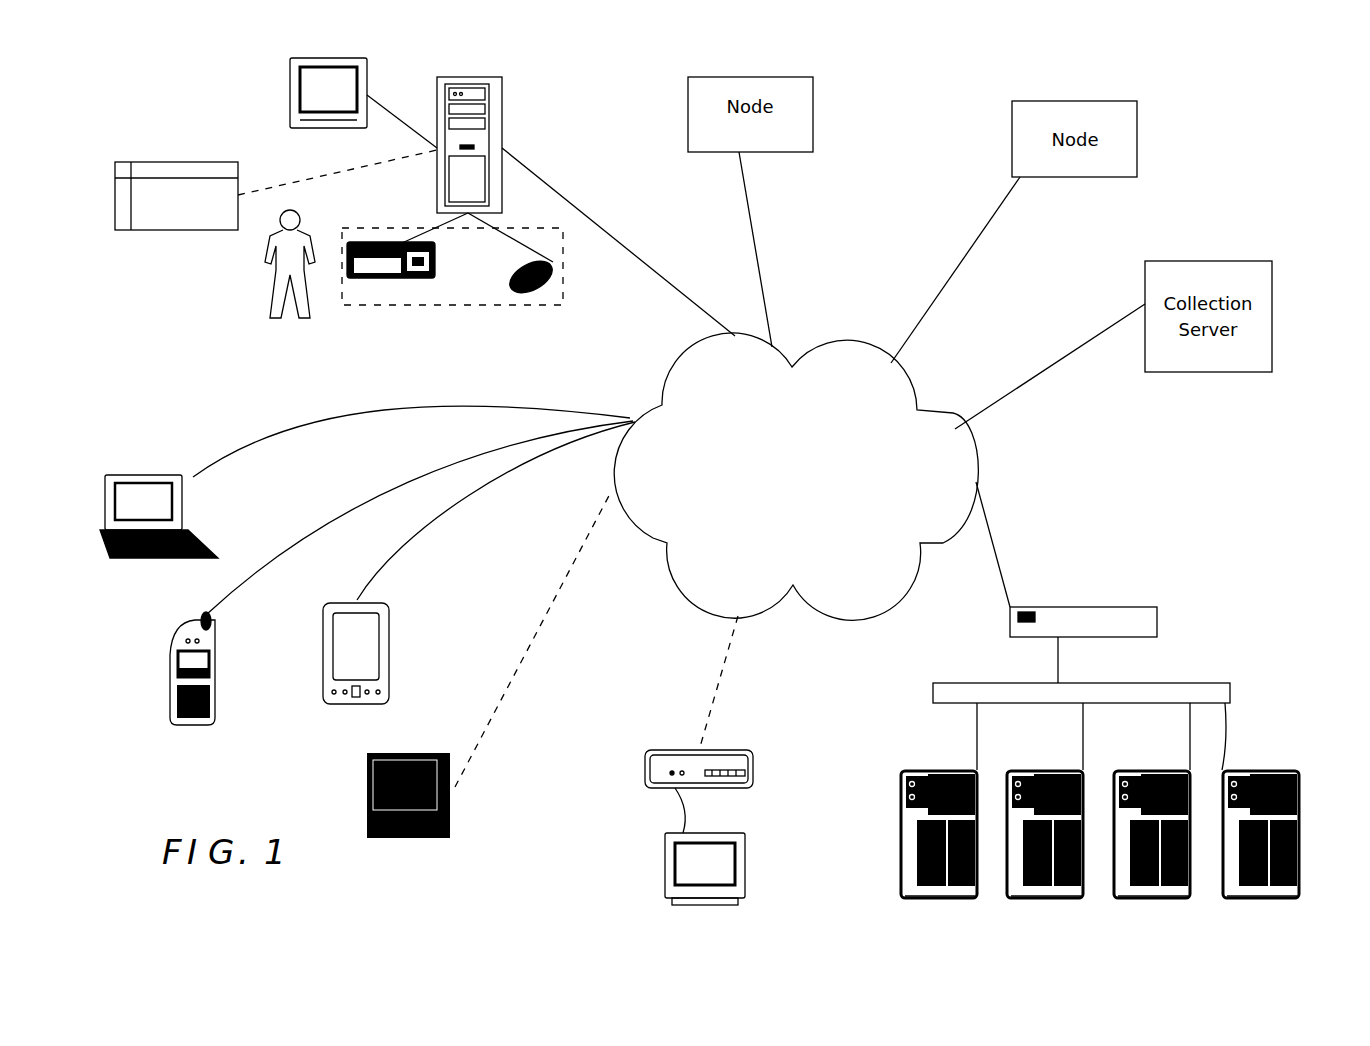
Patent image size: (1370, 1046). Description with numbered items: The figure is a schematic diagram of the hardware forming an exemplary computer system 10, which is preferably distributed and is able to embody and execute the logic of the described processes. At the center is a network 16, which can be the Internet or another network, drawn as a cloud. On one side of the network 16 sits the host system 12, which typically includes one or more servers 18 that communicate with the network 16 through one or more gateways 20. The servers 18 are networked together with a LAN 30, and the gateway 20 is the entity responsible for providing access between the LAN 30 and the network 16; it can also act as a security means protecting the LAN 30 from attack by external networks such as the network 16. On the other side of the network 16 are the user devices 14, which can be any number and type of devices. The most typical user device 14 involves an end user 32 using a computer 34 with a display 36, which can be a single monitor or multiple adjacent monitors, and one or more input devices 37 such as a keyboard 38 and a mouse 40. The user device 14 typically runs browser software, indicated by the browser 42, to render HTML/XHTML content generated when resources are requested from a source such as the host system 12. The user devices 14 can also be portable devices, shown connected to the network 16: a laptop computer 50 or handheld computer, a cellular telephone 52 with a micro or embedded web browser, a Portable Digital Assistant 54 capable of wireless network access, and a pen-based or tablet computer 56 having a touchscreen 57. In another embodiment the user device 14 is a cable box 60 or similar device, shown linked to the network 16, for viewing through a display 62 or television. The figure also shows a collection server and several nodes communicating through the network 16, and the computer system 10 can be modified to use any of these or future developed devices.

The computer system 10 is at (924, 144).
The host system 12 is at (1135, 530).
The user devices 14 is at (158, 768).
The network 16 is at (850, 331).
The servers 18 is at (1302, 768).
The gateway 20 is at (1157, 607).
The LAN 30 is at (1230, 700).
The end user 32 is at (265, 263).
The computer 34 is at (505, 78).
The display 36 is at (292, 62).
The input device 37 is at (360, 303).
The keyboard 38 is at (393, 278).
The mouse 40 is at (531, 288).
The browser 42 is at (115, 228).
The laptop computer 50 is at (157, 477).
The cellular telephone 52 is at (172, 675).
The Portable Digital Assistant 54 is at (325, 652).
The tablet computer 56 is at (367, 797).
The touchscreen 57 is at (402, 752).
The cable box 60 is at (753, 770).
The display 62 is at (745, 868).